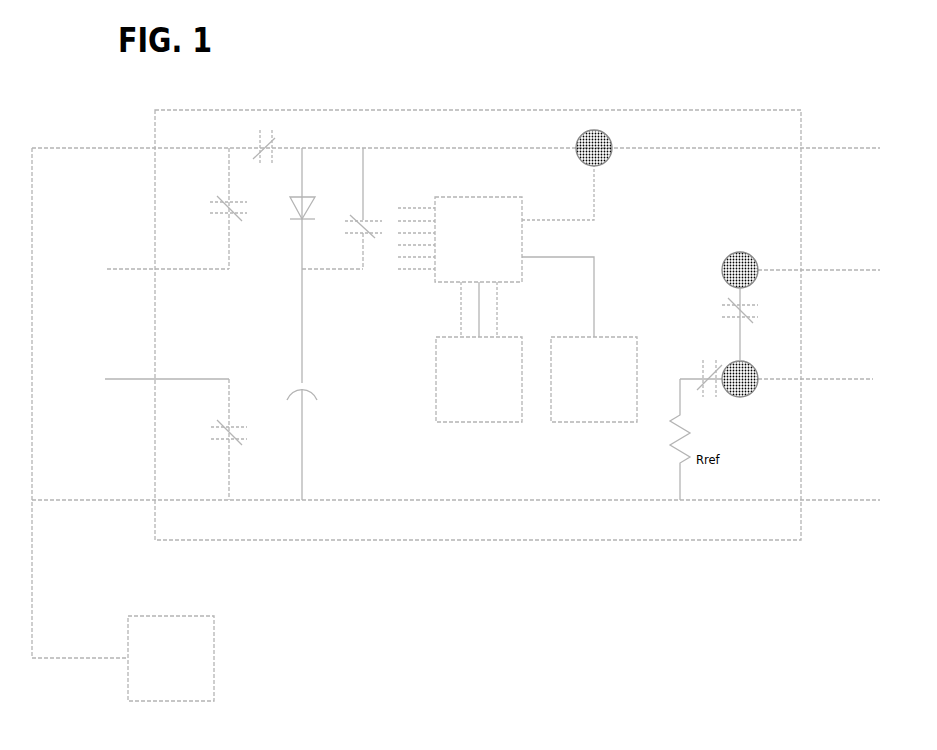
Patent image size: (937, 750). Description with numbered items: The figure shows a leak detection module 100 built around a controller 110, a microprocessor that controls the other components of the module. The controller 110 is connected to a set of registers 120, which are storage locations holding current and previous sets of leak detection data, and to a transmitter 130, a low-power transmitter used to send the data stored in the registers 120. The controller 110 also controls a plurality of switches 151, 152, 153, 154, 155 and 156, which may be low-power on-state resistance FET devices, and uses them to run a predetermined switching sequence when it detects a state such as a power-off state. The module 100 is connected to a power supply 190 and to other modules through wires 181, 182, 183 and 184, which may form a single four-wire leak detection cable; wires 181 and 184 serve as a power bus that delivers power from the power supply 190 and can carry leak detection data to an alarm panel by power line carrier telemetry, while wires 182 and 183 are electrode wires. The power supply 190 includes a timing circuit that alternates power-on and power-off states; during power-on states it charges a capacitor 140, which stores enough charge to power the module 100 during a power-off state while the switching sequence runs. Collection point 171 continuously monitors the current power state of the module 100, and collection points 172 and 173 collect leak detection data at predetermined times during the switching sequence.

The leak detection module 100 is at (482, 344).
The controller 110 is at (496, 251).
The registers 120 is at (479, 379).
The transmitter 130 is at (594, 379).
The capacitor 140 is at (331, 324).
The switch 151 is at (298, 145).
The switch 152 is at (387, 208).
The switch 153 is at (206, 208).
The switch 154 is at (704, 324).
The switch 155 is at (682, 371).
The switch 156 is at (204, 439).
The collection point 171 is at (624, 141).
The collection point 172 is at (733, 247).
The collection point 173 is at (753, 398).
The wire 181 is at (456, 158).
The wire 182 is at (465, 271).
The wire 183 is at (462, 381).
The wire 184 is at (456, 492).
The power supply 190 is at (123, 424).